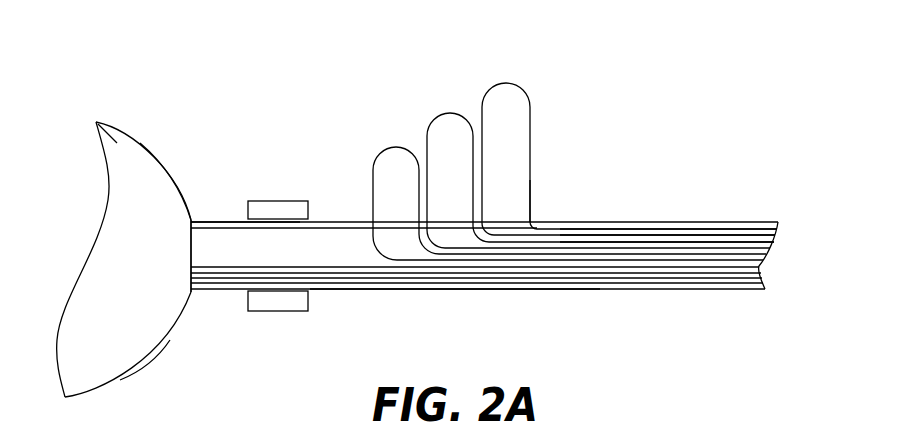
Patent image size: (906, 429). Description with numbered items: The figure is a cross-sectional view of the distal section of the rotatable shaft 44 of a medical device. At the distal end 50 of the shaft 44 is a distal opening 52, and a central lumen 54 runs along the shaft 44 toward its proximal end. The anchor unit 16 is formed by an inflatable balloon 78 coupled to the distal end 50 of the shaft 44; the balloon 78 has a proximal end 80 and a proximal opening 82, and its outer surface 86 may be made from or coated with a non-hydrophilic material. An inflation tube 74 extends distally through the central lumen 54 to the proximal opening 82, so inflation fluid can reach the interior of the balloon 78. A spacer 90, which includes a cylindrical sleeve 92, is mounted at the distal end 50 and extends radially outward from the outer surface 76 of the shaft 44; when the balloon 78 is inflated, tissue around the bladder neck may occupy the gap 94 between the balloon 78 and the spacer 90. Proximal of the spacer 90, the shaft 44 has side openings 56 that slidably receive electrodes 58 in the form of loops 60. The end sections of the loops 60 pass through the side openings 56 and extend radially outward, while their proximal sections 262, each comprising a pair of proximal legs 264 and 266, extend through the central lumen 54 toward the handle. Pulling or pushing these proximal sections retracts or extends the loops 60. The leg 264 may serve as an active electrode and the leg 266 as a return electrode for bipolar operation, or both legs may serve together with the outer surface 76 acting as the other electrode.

The anchor unit 16 is at (146, 104).
The rotatable shaft 44 is at (582, 222).
The distal end 50 is at (191, 221).
The distal opening 52 is at (191, 252).
The central lumen 54 is at (330, 243).
The side openings 56 is at (532, 220).
The electrodes 58 is at (463, 64).
The loops 60 is at (445, 113).
The inflation tube 74 is at (372, 290).
The outer surface 76 is at (452, 290).
The inflatable balloon 78 is at (106, 120).
The proximal end 80 is at (191, 292).
The proximal opening 82 is at (162, 348).
The outer surface 86 is at (173, 175).
The spacer 90 is at (276, 192).
The cylindrical sleeve 92 is at (284, 316).
The gap 94 is at (227, 212).
The proximal sections 262 is at (623, 219).
The proximal leg 264 is at (667, 228).
The proximal leg 266 is at (702, 235).